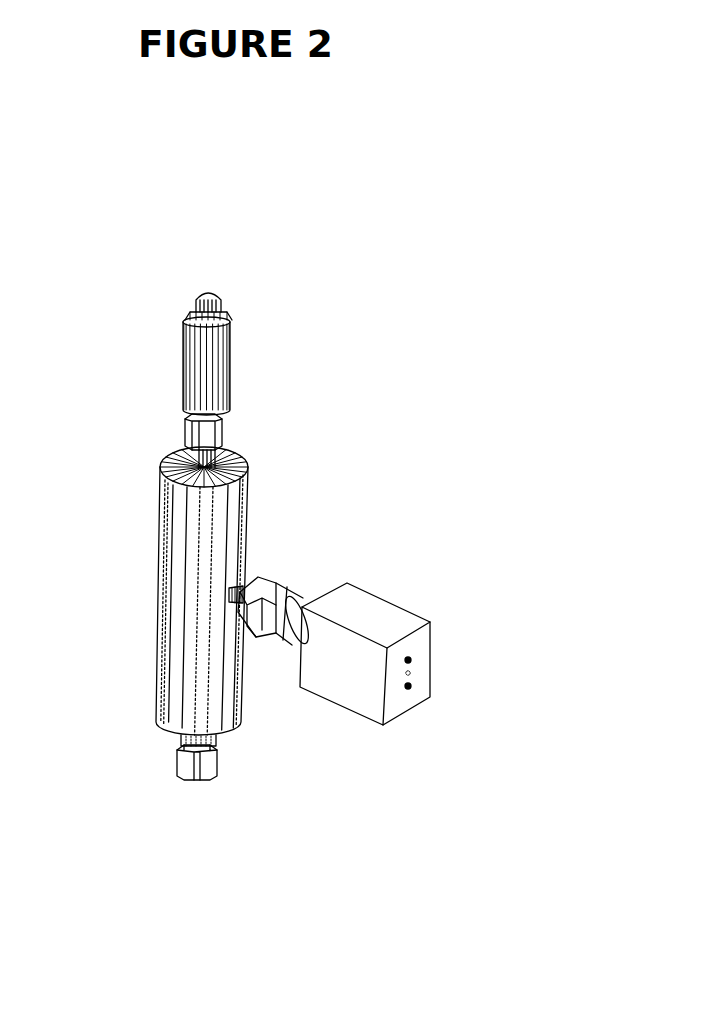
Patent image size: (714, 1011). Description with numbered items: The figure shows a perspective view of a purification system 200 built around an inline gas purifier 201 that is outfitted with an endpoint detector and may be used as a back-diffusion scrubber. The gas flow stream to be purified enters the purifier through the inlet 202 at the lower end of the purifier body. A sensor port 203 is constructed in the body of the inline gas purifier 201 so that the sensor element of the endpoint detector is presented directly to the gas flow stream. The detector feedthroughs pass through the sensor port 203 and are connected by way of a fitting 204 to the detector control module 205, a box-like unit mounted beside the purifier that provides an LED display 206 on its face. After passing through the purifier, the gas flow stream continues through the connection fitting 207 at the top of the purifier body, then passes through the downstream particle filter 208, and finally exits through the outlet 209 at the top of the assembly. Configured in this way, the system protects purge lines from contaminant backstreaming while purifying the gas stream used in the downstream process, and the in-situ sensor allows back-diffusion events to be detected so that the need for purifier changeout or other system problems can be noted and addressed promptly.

The purification system 200 is at (325, 293).
The inline gas purifier 201 is at (168, 635).
The inlet 202 is at (203, 780).
The sensor port 203 is at (245, 585).
The fitting 204 is at (293, 587).
The detector control module 205 is at (340, 705).
The LED display 206 is at (413, 679).
The connection fitting 207 is at (224, 437).
The particle filter 208 is at (192, 360).
The outlet 209 is at (211, 289).